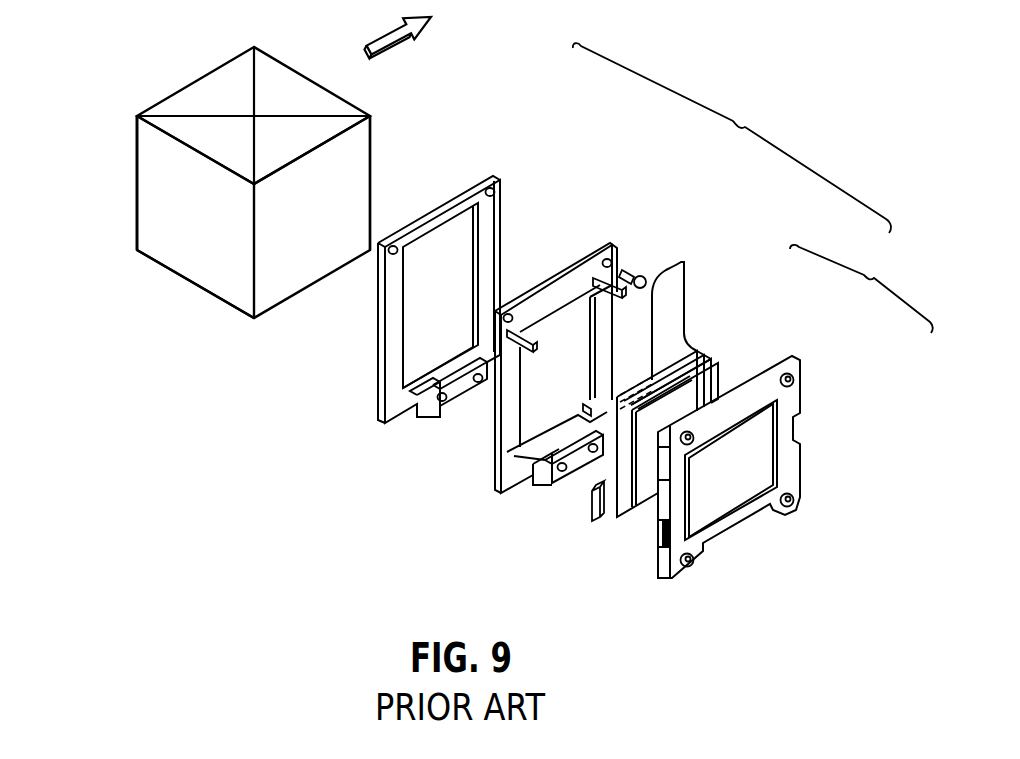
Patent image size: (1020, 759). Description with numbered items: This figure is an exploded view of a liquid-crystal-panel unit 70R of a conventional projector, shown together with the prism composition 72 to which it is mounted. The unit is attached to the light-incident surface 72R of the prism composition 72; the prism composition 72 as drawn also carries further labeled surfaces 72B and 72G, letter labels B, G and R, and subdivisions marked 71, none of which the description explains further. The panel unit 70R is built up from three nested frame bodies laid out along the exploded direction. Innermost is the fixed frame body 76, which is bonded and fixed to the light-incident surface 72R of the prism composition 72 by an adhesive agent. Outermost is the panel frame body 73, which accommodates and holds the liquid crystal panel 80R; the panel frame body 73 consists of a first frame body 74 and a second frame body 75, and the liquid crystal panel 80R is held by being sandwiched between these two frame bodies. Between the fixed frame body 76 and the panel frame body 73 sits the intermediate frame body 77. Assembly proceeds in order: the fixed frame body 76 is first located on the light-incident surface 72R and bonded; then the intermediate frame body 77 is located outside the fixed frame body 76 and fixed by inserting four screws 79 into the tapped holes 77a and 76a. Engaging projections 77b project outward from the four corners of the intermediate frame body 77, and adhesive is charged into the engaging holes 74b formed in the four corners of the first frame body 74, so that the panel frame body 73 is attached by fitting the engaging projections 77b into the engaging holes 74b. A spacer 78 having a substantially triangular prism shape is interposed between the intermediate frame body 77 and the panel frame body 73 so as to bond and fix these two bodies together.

The liquid-crystal-panel unit 70R is at (732, 138).
The pixel regions 71 is at (240, 105).
The prism composition 72 is at (124, 293).
The blue light incident surface 72B is at (137, 184).
The green light incident surface 72G is at (174, 240).
The light-incident surface 72R is at (359, 157).
The panel frame body 73 is at (861, 288).
The first frame body 74 is at (792, 362).
The engaging holes 74b is at (794, 382).
The second frame body 75 is at (705, 341).
The fixed frame body 76 is at (504, 167).
The tapped holes 76a is at (497, 192).
The intermediate frame body 77 is at (599, 239).
The tapped holes 77a is at (613, 260).
The engaging projections 77b is at (595, 275).
The spacer 78 is at (596, 512).
The screws 79 is at (650, 276).
The liquid crystal panel 80R is at (726, 368).
The blue light B is at (117, 112).
The green light G is at (218, 273).
The red light R is at (344, 189).